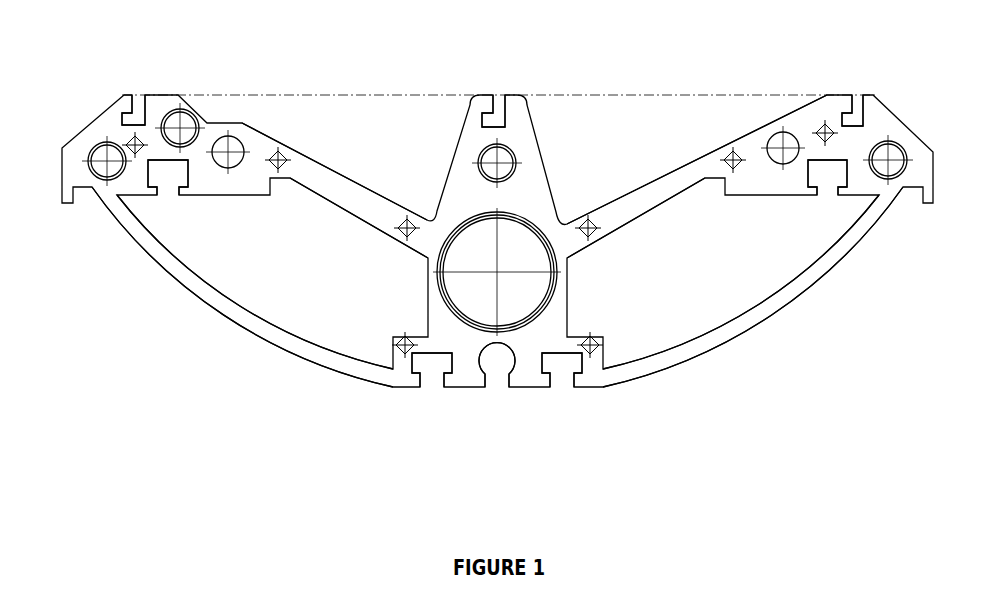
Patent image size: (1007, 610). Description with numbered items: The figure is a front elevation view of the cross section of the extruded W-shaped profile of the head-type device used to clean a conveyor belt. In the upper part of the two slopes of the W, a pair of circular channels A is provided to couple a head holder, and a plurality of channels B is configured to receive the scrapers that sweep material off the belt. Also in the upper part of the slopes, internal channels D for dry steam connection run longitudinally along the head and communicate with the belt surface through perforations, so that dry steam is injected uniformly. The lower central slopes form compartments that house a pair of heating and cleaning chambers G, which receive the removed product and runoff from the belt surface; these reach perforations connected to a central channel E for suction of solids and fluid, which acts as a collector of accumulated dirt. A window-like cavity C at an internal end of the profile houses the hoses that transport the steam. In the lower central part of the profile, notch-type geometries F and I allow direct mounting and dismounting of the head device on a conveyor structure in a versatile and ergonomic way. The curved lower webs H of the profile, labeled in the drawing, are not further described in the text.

The circular channels A is at (97, 138).
The channels B is at (143, 100).
The window-like cavity C is at (381, 141).
The internal channels D is at (234, 135).
The channel E is at (547, 224).
The notch-type geometries F is at (148, 185).
The heating and cleaning chambers G is at (665, 140).
The curved web H is at (302, 280).
The notch-type geometries I is at (401, 352).